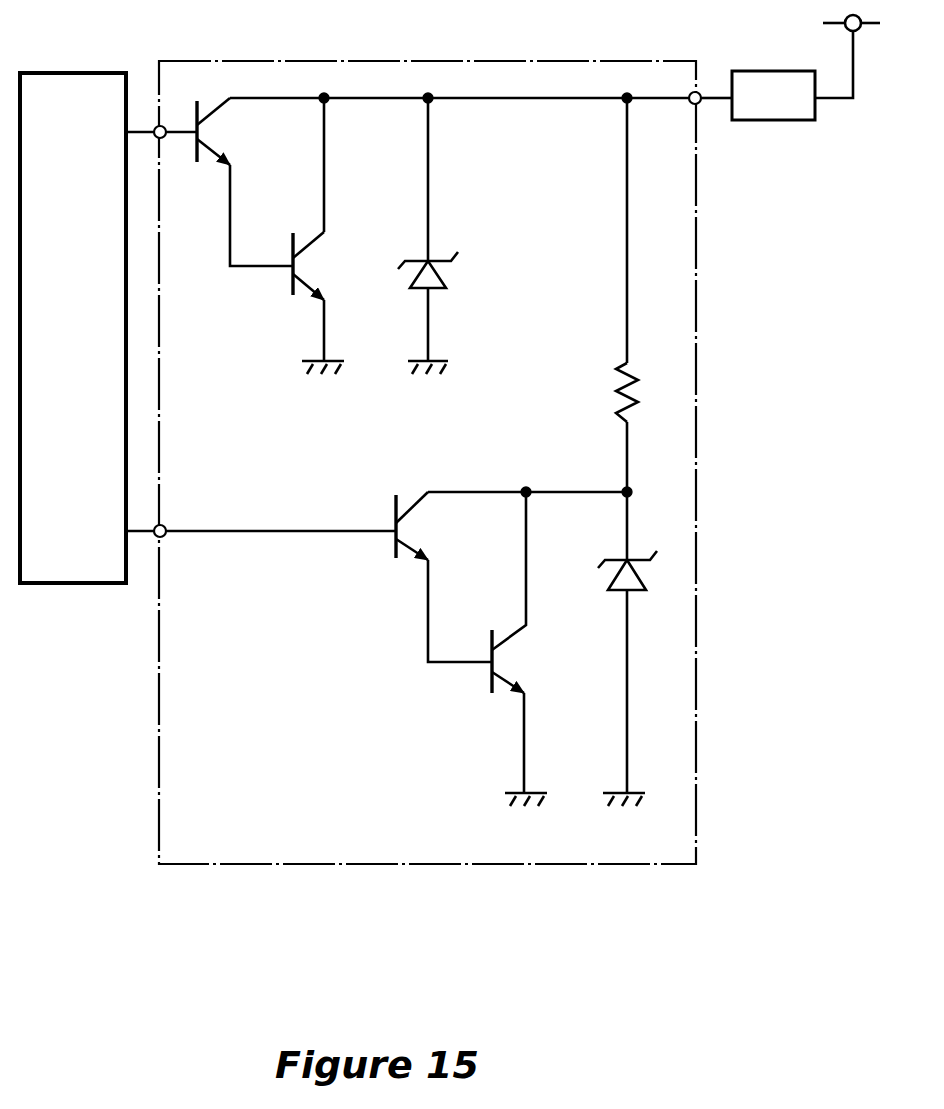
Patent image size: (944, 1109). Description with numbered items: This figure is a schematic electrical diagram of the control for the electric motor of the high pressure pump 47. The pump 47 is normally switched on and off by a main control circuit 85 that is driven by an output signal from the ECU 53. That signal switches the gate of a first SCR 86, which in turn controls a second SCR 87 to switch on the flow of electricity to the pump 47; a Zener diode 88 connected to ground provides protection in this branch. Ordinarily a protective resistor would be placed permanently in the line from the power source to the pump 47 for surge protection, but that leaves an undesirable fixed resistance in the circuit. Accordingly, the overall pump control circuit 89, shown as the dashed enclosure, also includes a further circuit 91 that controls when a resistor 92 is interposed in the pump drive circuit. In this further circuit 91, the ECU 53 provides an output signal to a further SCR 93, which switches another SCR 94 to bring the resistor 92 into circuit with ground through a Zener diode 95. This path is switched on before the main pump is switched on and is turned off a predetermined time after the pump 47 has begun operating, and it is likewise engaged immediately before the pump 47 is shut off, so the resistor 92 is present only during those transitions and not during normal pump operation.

The high pressure pump 47 is at (758, 120).
The ECU 53 is at (63, 583).
The main control circuit 85 is at (290, 301).
The first SCR 86 is at (232, 139).
The second SCR 87 is at (327, 274).
The Zener diode 88 is at (457, 274).
The pump control circuit 89 is at (363, 864).
The further circuit 91 is at (431, 649).
The resistor 92 is at (588, 400).
The further SCR 93 is at (440, 536).
The another SCR 94 is at (527, 671).
The Zener diode 95 is at (591, 584).